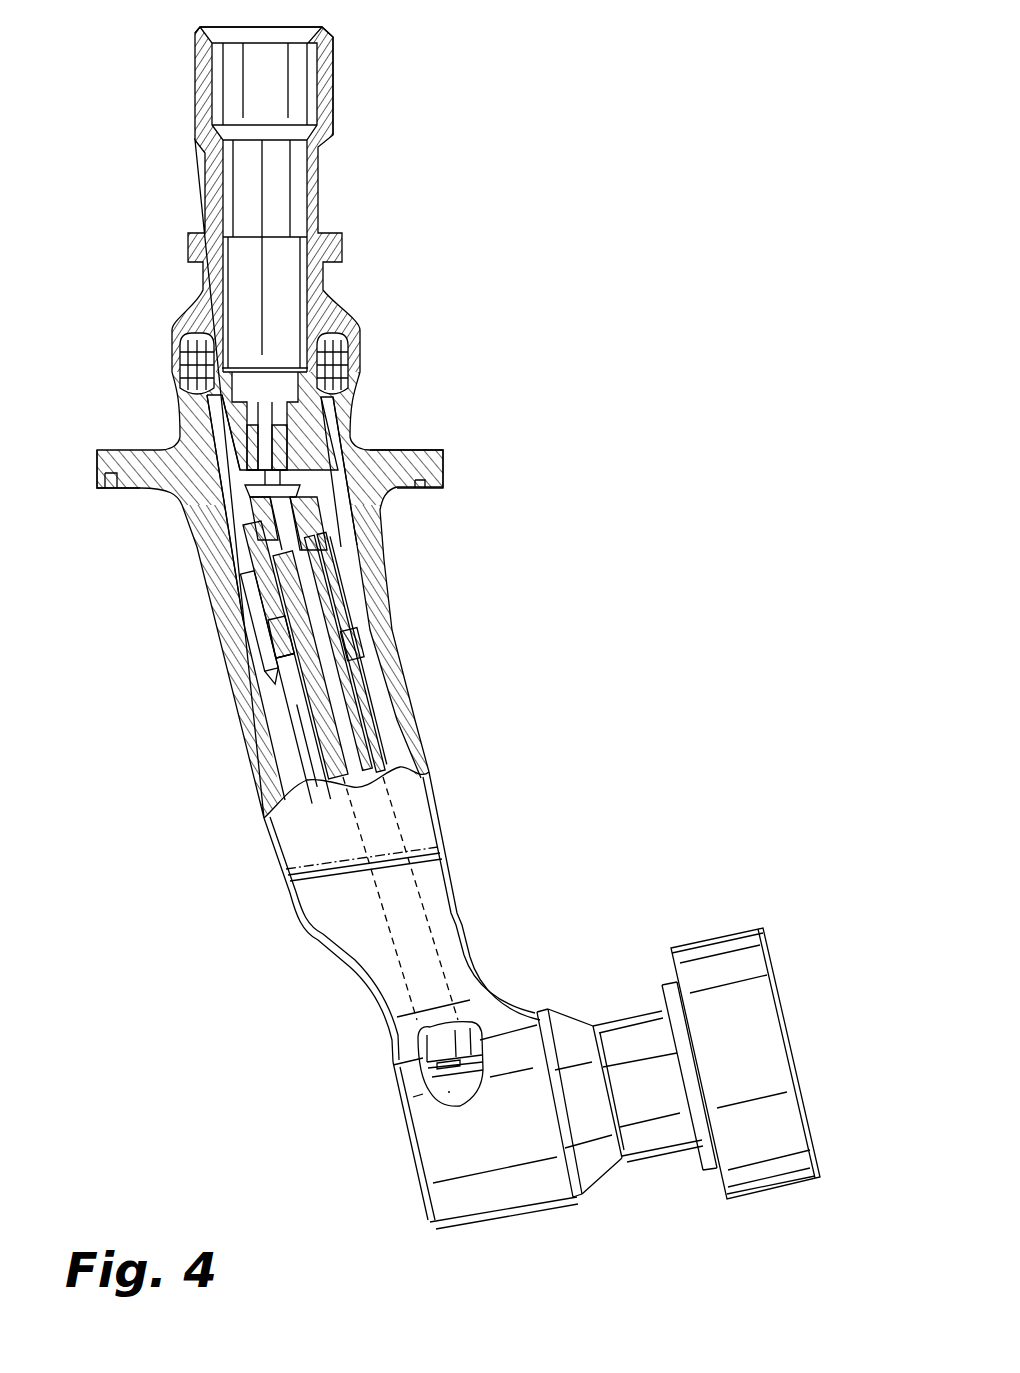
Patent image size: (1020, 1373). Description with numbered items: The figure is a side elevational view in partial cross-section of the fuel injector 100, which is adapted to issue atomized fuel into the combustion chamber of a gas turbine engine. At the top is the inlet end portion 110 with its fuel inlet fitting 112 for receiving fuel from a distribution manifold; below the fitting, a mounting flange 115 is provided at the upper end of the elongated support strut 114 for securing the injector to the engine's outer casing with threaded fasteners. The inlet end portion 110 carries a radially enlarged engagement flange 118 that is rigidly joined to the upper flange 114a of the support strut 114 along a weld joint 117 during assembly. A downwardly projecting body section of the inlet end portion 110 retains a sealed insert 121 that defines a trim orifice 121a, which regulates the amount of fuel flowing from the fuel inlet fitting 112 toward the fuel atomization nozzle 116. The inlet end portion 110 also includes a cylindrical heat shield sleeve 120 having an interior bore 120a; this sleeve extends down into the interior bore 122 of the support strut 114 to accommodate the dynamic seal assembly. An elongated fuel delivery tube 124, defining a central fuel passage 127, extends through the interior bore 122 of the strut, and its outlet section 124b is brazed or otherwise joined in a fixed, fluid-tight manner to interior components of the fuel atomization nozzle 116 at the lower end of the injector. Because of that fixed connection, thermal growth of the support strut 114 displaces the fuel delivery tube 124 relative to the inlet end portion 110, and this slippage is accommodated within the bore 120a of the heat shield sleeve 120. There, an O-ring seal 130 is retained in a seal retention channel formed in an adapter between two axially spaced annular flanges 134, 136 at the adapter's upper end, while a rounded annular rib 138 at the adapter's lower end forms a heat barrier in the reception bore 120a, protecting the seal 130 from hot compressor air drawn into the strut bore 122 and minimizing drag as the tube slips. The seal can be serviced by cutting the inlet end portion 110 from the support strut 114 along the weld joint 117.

The fuel injector 100 is at (592, 323).
The inlet end portion 110 is at (320, 172).
The fuel inlet fitting 112 is at (195, 70).
The support strut 114 is at (283, 862).
The upper flange 114a is at (365, 385).
The mounting flange 115 is at (447, 460).
The fuel atomization nozzle 116 is at (733, 935).
The weld joint 117 is at (370, 377).
The engagement flange 118 is at (356, 258).
The heat shield sleeve 120 is at (342, 577).
The interior bore 120a is at (268, 662).
The sealed insert 121 is at (195, 433).
The trim orifice 121a is at (255, 400).
The interior bore 122 is at (263, 728).
The fuel delivery tube 124 is at (375, 765).
The outlet section 124b is at (463, 1023).
The central fuel passage 127 is at (347, 707).
The O-ring seal 130 is at (257, 540).
The annular flange 134 is at (243, 517).
The annular flange 136 is at (273, 613).
The rounded annular rib 138 is at (347, 643).